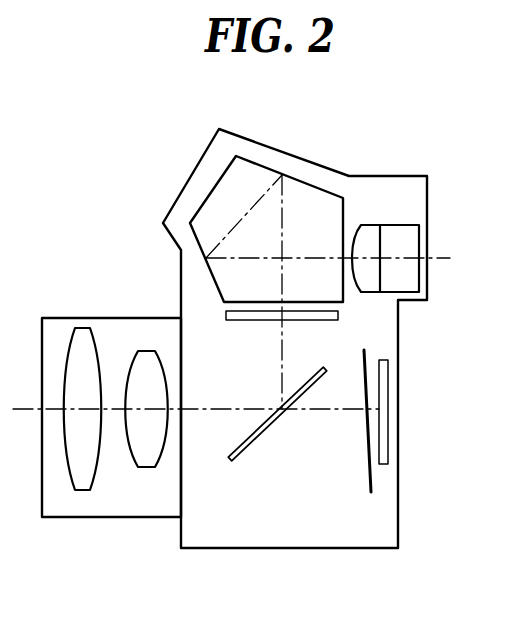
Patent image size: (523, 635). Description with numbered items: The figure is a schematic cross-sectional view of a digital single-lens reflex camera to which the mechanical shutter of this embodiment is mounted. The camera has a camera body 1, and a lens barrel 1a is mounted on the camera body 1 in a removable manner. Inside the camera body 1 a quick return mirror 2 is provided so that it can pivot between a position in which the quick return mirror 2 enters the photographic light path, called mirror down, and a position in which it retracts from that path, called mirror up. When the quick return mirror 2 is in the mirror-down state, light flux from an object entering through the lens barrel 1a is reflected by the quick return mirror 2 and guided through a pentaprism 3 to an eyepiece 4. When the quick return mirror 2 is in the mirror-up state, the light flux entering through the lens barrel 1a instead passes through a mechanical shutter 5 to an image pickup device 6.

The camera body 1 is at (399, 528).
The lens barrel 1a is at (88, 520).
The quick return mirror 2 is at (263, 433).
The pentaprism 3 is at (243, 178).
The eyepiece 4 is at (372, 237).
The mechanical shutter 5 is at (367, 353).
The image pickup device 6 is at (388, 393).